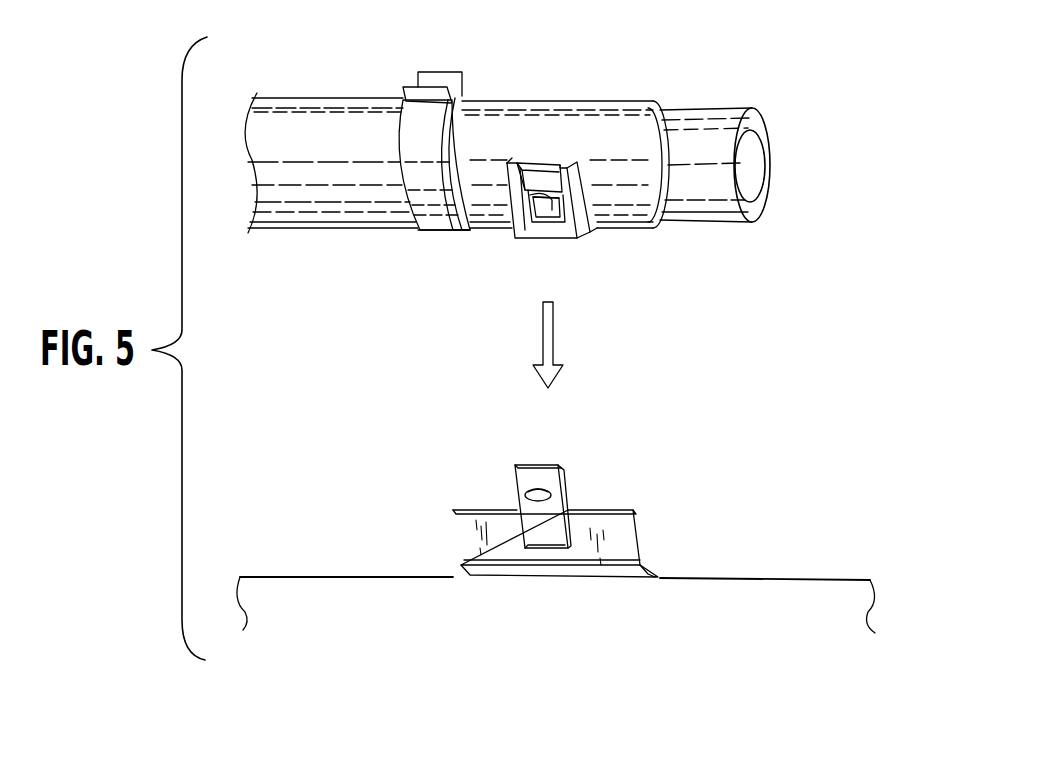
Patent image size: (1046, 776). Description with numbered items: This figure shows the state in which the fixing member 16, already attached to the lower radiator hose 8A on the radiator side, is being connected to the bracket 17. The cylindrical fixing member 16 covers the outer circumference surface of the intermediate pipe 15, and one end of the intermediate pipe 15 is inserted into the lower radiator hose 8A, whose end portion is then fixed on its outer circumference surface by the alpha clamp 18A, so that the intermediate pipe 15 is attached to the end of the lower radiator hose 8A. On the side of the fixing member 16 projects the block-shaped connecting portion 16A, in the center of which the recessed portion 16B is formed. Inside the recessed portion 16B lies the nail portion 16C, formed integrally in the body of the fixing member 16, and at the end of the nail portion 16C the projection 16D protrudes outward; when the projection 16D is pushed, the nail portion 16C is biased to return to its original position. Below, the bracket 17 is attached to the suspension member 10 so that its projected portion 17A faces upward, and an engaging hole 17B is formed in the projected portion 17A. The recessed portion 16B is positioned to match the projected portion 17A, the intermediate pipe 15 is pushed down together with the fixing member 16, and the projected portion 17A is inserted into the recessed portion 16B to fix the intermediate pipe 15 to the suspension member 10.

The lower radiator hose 8A is at (298, 123).
The alpha clamp 18A is at (405, 145).
The fixing member 16 is at (573, 120).
The connecting portion 16A is at (573, 232).
The recessed portion 16B is at (535, 173).
The nail portion 16C is at (532, 228).
The projection 16D is at (546, 210).
The intermediate pipe 15 is at (695, 133).
The suspension member 10 is at (358, 592).
The bracket 17 is at (622, 560).
The projected portion 17A is at (555, 480).
The engaging hole 17B is at (535, 490).